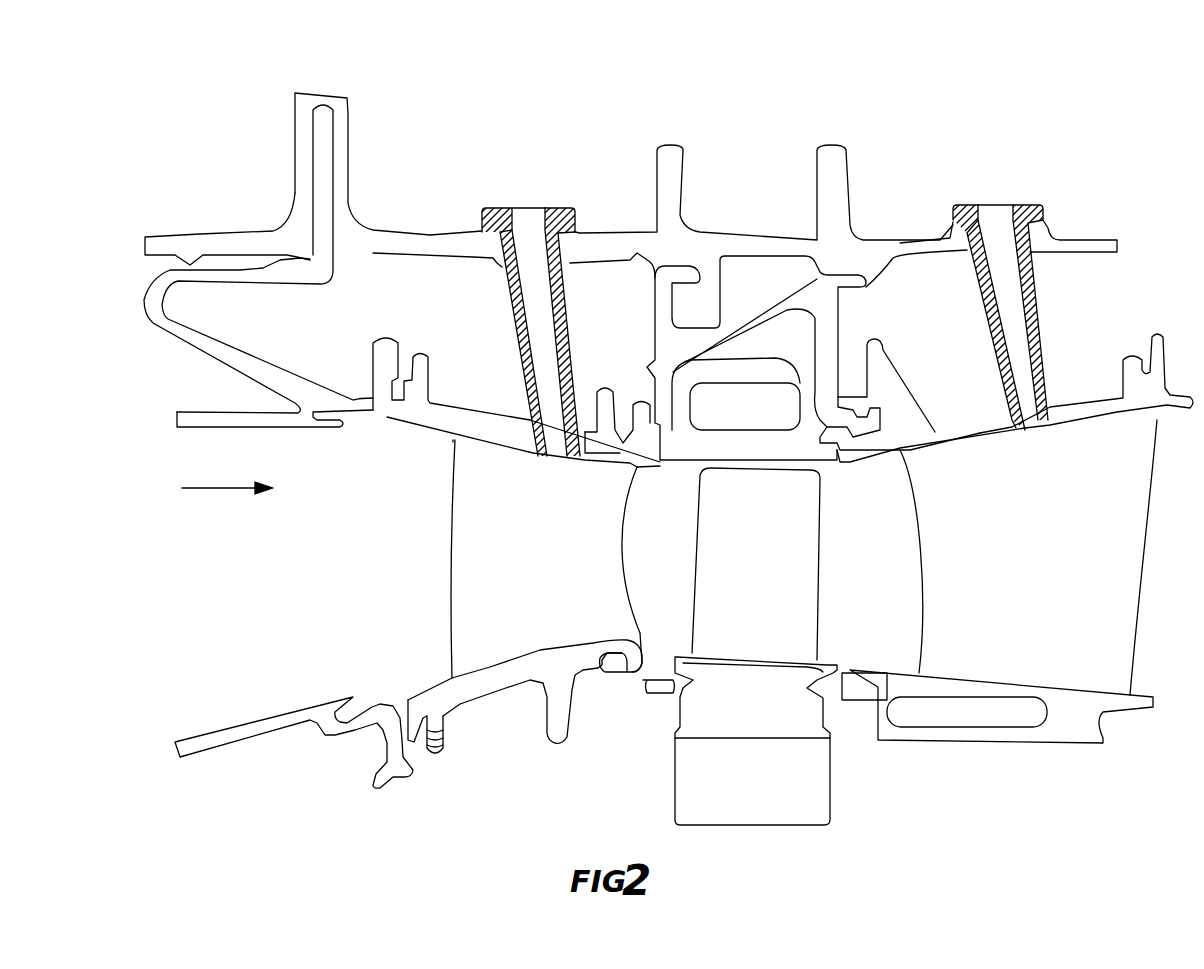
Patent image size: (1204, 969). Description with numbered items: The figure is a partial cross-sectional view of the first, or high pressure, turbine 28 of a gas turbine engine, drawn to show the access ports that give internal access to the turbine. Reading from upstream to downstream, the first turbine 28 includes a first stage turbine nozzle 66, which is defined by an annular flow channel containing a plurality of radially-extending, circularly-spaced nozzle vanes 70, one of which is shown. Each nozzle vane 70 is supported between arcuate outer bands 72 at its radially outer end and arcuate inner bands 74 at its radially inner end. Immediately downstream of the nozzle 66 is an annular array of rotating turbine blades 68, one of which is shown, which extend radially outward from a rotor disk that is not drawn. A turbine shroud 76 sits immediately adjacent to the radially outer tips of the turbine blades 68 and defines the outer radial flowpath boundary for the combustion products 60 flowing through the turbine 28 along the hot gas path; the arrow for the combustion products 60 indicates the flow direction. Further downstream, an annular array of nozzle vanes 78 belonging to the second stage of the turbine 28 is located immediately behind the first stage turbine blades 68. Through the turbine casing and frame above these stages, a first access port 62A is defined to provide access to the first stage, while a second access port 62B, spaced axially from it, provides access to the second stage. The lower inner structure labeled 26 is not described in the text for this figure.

The first turbine 28 is at (599, 76).
The first access port 62A is at (524, 202).
The second access port 62B is at (994, 197).
The arcuate outer bands 72 is at (476, 420).
The turbine shroud 76 is at (777, 377).
The combustion products 60 is at (213, 489).
The first stage turbine nozzle 66 is at (447, 580).
The nozzle vanes 70 is at (542, 588).
The turbine blades 68 is at (760, 576).
The nozzle vanes of second stage 78 is at (1018, 552).
The inner casing / support 26 is at (210, 742).
The arcuate inner bands 74 is at (481, 688).